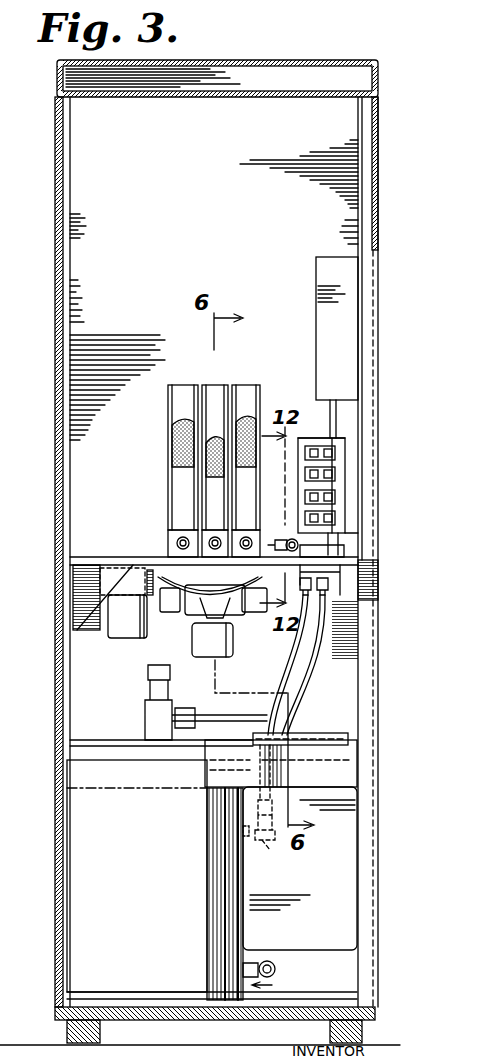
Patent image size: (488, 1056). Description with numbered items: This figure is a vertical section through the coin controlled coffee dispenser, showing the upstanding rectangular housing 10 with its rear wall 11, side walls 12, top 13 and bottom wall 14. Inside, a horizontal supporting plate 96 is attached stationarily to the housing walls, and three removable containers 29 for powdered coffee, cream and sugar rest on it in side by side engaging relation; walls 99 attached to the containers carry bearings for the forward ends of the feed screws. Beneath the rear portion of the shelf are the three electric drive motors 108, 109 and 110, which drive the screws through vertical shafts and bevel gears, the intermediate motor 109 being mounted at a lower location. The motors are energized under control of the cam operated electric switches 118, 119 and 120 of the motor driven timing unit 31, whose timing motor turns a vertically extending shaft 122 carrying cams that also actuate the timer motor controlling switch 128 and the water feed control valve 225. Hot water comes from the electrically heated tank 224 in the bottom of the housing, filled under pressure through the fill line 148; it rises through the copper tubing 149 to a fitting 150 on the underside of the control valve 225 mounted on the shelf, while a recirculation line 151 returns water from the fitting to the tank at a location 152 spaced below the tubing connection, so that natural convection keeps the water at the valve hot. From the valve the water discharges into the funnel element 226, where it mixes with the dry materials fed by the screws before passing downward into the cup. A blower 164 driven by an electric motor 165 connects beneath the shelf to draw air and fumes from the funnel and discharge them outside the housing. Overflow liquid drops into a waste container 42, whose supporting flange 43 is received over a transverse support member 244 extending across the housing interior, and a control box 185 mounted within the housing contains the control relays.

The housing 10 is at (52, 321).
The rear wall 11 is at (214, 327).
The side walls 12 is at (57, 267).
The top 13 is at (340, 62).
The bottom wall 14 is at (168, 1005).
The removable containers 29 is at (222, 384).
The motor driven timing unit 31 is at (360, 436).
The waste container 42 is at (345, 873).
The supporting flange 43 is at (292, 746).
The horizontal supporting plate 96 is at (150, 564).
The walls 99 is at (183, 536).
The electric drive motor 108 is at (200, 600).
The intermediate electric drive motor 109 is at (234, 650).
The electric drive motor 110 is at (258, 613).
The cam operated electric switch 118 is at (336, 459).
The cam operated electric switch 119 is at (336, 479).
The cam operated electric switch 120 is at (336, 500).
The vertically extending shaft 122 is at (350, 536).
The timer motor controlling switch 128 is at (336, 520).
The fill line 148 is at (276, 969).
The copper tubing 149 is at (300, 695).
The fitting 150 is at (320, 572).
The recirculation line 151 is at (290, 692).
The location 152 is at (265, 845).
The blower 164 is at (118, 566).
The electric motor 165 is at (130, 634).
The control box 185 is at (331, 264).
The electrically heated tank 224 is at (78, 880).
The control valve 225 is at (338, 555).
The funnel element 226 is at (200, 622).
The transverse support member 244 is at (352, 738).